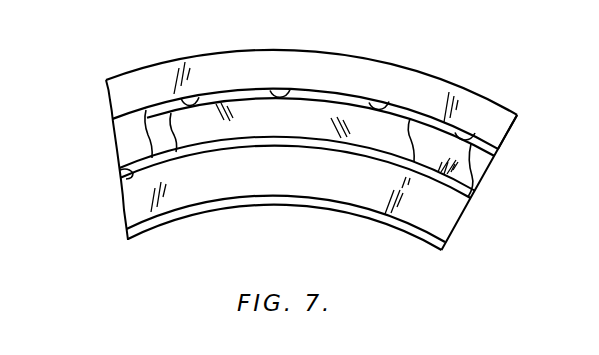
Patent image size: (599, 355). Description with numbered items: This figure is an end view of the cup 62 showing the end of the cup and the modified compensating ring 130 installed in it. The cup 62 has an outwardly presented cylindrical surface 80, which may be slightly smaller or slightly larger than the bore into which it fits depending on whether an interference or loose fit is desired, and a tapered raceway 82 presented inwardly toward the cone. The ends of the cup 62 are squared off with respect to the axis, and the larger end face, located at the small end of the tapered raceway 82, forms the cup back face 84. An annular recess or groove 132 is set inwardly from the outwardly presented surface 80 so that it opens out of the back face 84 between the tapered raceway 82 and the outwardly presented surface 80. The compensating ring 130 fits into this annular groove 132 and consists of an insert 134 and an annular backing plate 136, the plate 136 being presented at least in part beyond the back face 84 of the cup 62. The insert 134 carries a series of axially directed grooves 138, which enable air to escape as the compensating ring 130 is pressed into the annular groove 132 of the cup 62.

The cup 62 is at (500, 115).
The outwardly presented cylindrical surface 80 is at (143, 68).
The tapered raceway 82 is at (330, 213).
The cup back face 84 is at (180, 202).
The compensating ring 130 is at (140, 139).
The annular groove 132 is at (124, 174).
The insert 134 is at (462, 165).
The annular backing plate 136 is at (327, 109).
The axially directed grooves 138 is at (279, 90).